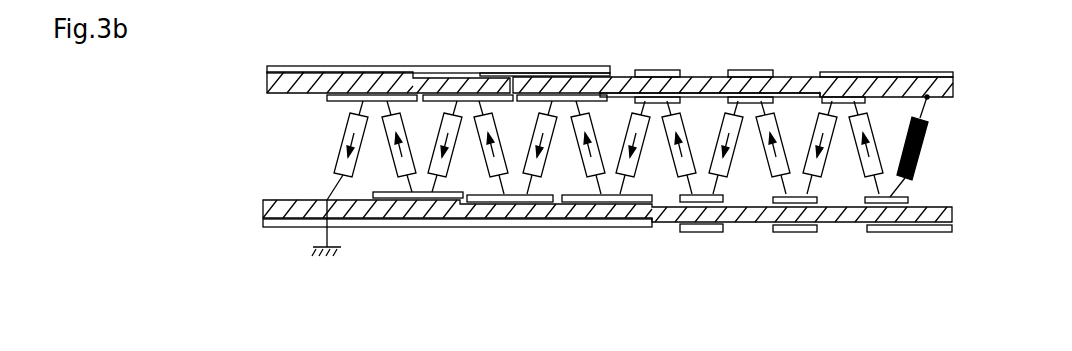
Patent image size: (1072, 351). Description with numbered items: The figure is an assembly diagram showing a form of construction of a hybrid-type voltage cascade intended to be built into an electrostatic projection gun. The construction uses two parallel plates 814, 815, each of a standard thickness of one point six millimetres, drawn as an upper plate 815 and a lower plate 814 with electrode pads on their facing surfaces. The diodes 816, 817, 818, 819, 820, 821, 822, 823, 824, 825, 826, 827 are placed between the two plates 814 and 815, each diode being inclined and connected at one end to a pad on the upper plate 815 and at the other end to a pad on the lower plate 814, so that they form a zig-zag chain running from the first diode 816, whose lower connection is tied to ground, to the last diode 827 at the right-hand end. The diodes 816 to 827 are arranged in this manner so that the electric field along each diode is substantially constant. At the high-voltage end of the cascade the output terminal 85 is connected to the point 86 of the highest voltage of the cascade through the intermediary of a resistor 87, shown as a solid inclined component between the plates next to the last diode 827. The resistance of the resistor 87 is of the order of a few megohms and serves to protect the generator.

The plate 815 is at (941, 77).
The plate 814 is at (943, 217).
The diode 816 is at (347, 124).
The diode 817 is at (397, 123).
The diode 818 is at (436, 127).
The diode 819 is at (493, 127).
The diode 820 is at (531, 127).
The diode 821 is at (590, 127).
The diode 822 is at (628, 127).
The diode 823 is at (681, 127).
The diode 824 is at (722, 127).
The diode 825 is at (773, 127).
The diode 826 is at (813, 127).
The diode 827 is at (860, 127).
The output terminal 85 is at (927, 97).
The resistor 87 is at (923, 143).
The point of the highest voltage 86 is at (913, 182).